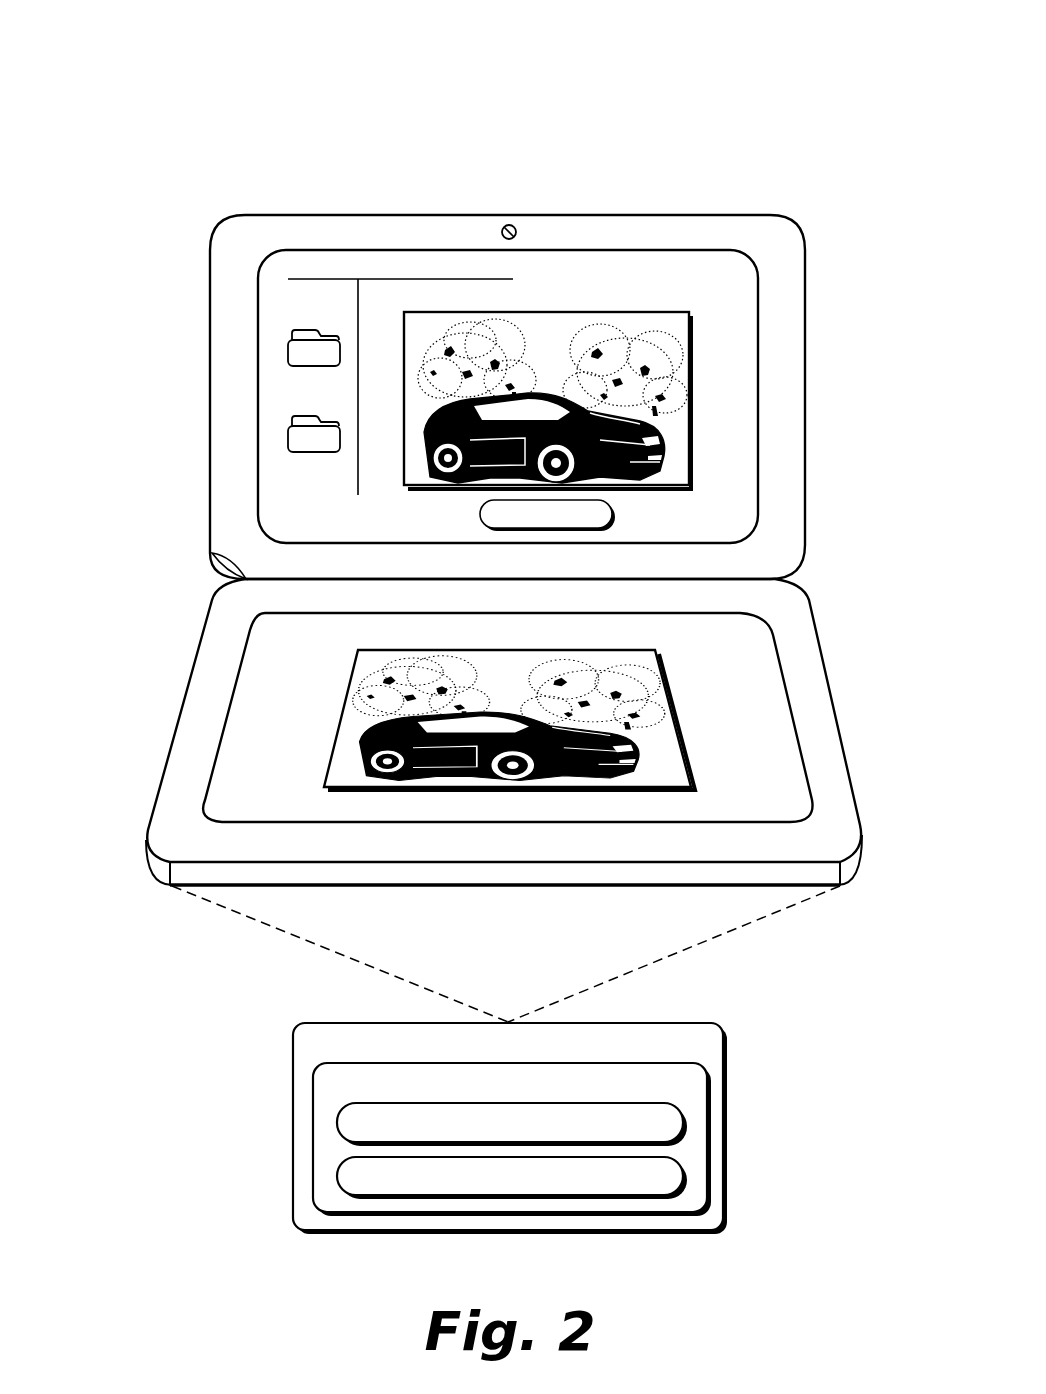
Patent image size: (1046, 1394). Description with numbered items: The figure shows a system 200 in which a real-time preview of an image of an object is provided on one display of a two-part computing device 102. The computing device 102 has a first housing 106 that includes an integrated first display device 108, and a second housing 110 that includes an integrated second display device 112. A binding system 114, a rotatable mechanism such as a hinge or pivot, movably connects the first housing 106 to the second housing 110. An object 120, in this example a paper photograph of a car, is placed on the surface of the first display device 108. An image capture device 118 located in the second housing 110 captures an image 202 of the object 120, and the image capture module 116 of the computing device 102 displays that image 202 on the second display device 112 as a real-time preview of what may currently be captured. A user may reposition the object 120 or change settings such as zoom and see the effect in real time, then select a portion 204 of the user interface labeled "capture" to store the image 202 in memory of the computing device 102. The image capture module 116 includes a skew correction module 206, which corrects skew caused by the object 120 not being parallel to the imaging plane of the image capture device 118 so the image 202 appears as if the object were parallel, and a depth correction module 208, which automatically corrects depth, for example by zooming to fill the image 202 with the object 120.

The system 200 is at (188, 68).
The computing device 102 is at (510, 1128).
The first housing 106 is at (845, 810).
The first display device 108 is at (795, 733).
The second housing 110 is at (795, 233).
The second display device 112 is at (762, 398).
The binding system 114 is at (213, 553).
The image capture module 116 is at (512, 1139).
The image capture device 118 is at (504, 226).
The object 120 is at (668, 745).
The image 202 is at (541, 317).
The portion of a user interface 204 is at (614, 517).
The skew correction module 206 is at (512, 1124).
The depth correction module 208 is at (512, 1178).